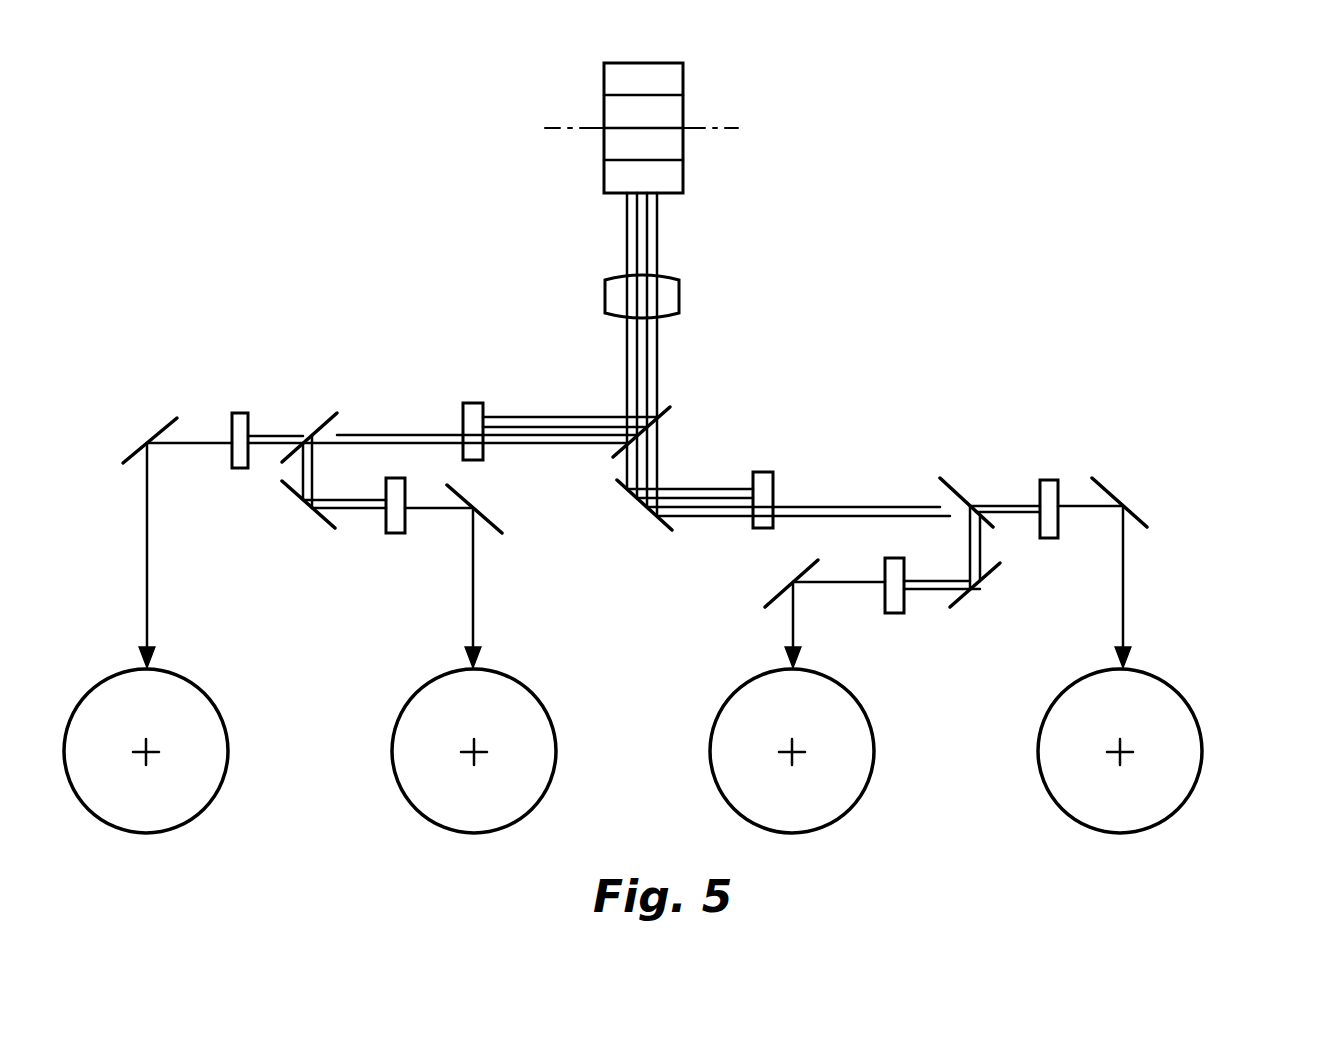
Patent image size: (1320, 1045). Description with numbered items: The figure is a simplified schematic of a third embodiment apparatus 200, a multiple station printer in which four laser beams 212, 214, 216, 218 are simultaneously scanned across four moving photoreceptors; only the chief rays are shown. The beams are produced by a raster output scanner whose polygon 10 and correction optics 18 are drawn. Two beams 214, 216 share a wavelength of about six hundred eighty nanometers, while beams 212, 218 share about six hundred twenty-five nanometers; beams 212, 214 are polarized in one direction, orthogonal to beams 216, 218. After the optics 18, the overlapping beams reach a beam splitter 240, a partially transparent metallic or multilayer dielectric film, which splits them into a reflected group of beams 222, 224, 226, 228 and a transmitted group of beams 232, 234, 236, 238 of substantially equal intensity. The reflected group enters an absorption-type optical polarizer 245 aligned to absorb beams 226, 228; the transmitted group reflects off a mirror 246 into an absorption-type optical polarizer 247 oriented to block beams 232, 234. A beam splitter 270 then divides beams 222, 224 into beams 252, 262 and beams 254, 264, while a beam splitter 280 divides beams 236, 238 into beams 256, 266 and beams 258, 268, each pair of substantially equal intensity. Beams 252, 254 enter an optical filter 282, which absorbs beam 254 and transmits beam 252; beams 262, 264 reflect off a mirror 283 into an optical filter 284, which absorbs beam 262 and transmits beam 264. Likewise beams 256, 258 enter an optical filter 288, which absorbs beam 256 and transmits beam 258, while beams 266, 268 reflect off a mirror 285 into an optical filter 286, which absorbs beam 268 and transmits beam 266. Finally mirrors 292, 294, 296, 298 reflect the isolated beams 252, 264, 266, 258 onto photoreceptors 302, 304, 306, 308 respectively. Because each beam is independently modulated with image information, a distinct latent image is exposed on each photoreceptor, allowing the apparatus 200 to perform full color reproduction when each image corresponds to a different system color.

The polygon 10 is at (672, 82).
The correction optics 18 is at (660, 292).
The apparatus 200 is at (1030, 102).
The laser beam 212 is at (628, 383).
The laser beam 214 is at (633, 352).
The laser beam 216 is at (656, 352).
The laser beam 218 is at (649, 380).
The beam 222 is at (453, 446).
The beam 224 is at (437, 433).
The beam 226 is at (517, 417).
The beam 228 is at (561, 424).
The beam 232 is at (723, 493).
The beam 234 is at (675, 493).
The beam 236 is at (797, 517).
The beam 238 is at (822, 500).
The beam splitter 240 is at (667, 410).
The absorption-type optical polarizer 245 is at (474, 401).
The mirror 246 is at (652, 515).
The absorption-type optical polarizer 247 is at (761, 472).
The beam 252 is at (273, 447).
The beam 254 is at (280, 432).
The beam 256 is at (1013, 520).
The beam 258 is at (995, 505).
The beam 262 is at (350, 498).
The beam 264 is at (358, 512).
The beam 266 is at (938, 578).
The beam 268 is at (937, 593).
The beam splitter 270 is at (328, 417).
The beam splitter 280 is at (957, 480).
The optical filter 282 is at (236, 412).
The mirror 283 is at (322, 527).
The optical filter 284 is at (397, 535).
The mirror 285 is at (990, 574).
The optical filter 286 is at (895, 615).
The optical filter 288 is at (1052, 480).
The mirror 292 is at (168, 420).
The mirror 294 is at (487, 506).
The mirror 296 is at (790, 583).
The mirror 298 is at (1145, 517).
The photoreceptor 302 is at (208, 751).
The photoreceptor 304 is at (536, 751).
The photoreceptor 306 is at (1182, 751).
The photoreceptor 308 is at (854, 751).